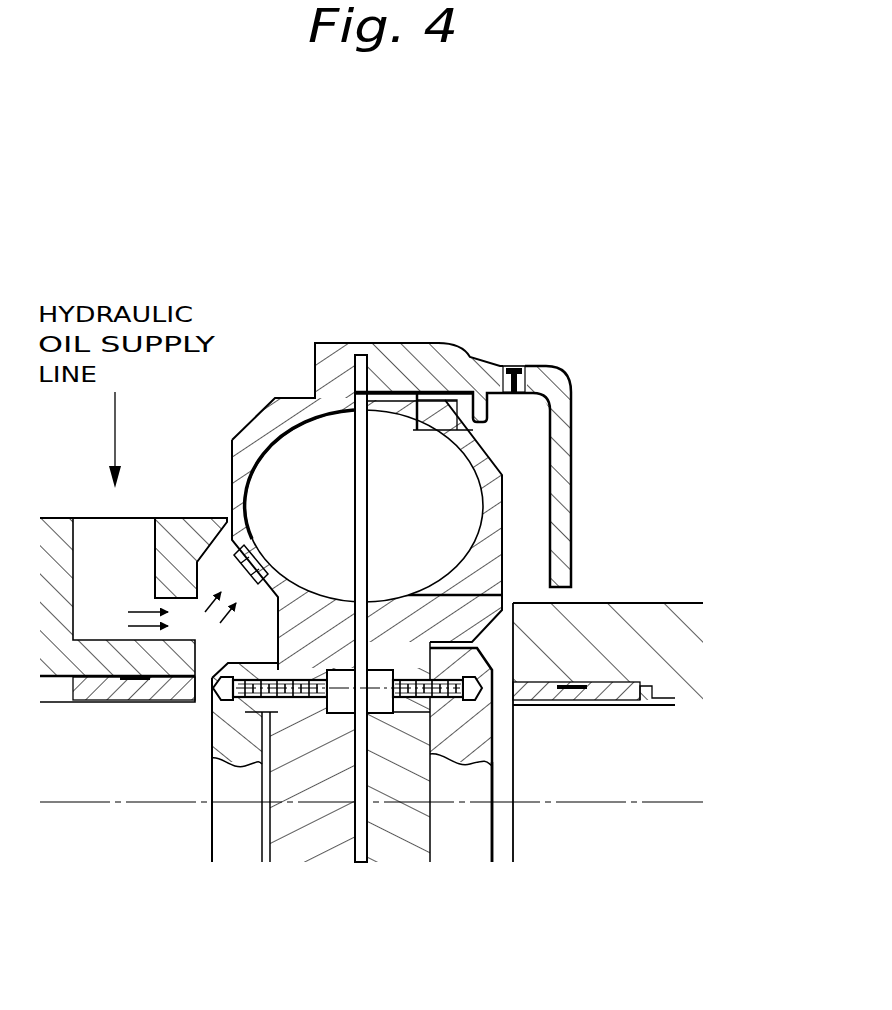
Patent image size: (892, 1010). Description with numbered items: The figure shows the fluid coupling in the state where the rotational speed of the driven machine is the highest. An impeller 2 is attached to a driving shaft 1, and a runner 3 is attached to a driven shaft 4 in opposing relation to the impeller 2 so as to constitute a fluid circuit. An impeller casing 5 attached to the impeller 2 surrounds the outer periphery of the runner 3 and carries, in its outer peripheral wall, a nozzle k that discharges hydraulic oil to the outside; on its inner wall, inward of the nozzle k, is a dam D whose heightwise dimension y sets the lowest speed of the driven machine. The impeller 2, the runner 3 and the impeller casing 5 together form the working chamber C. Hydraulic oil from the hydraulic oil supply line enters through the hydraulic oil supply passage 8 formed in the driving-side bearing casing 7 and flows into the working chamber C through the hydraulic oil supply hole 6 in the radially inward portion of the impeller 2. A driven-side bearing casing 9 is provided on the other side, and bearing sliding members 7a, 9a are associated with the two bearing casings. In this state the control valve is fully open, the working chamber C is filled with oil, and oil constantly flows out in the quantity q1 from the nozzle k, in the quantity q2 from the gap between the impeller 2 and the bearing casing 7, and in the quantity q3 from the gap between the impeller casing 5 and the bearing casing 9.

The driving shaft 1 is at (153, 723).
The impeller 2 is at (250, 418).
The runner 3 is at (387, 390).
The driven shaft 4 is at (665, 722).
The impeller casing 5 is at (421, 344).
The hydraulic oil supply hole 6 is at (262, 562).
The driving-side bearing casing 7 is at (172, 517).
The bearing sliding member 7a is at (88, 705).
The hydraulic oil supply passage 8 is at (78, 570).
The driven-side bearing casing 9 is at (652, 603).
The bearing sliding member 9a is at (598, 699).
The working chamber C is at (334, 491).
The dam D is at (462, 430).
The heightwise dimension of the dam y is at (416, 402).
The nozzle k is at (518, 364).
The quantity of oil leaking from the nozzle q1 is at (508, 342).
The quantity of oil leaking from the gap between the impeller and the bearing casing q2 is at (212, 521).
The quantity of oil leaking from the gap between the impeller casing and the bearing q3 is at (586, 565).